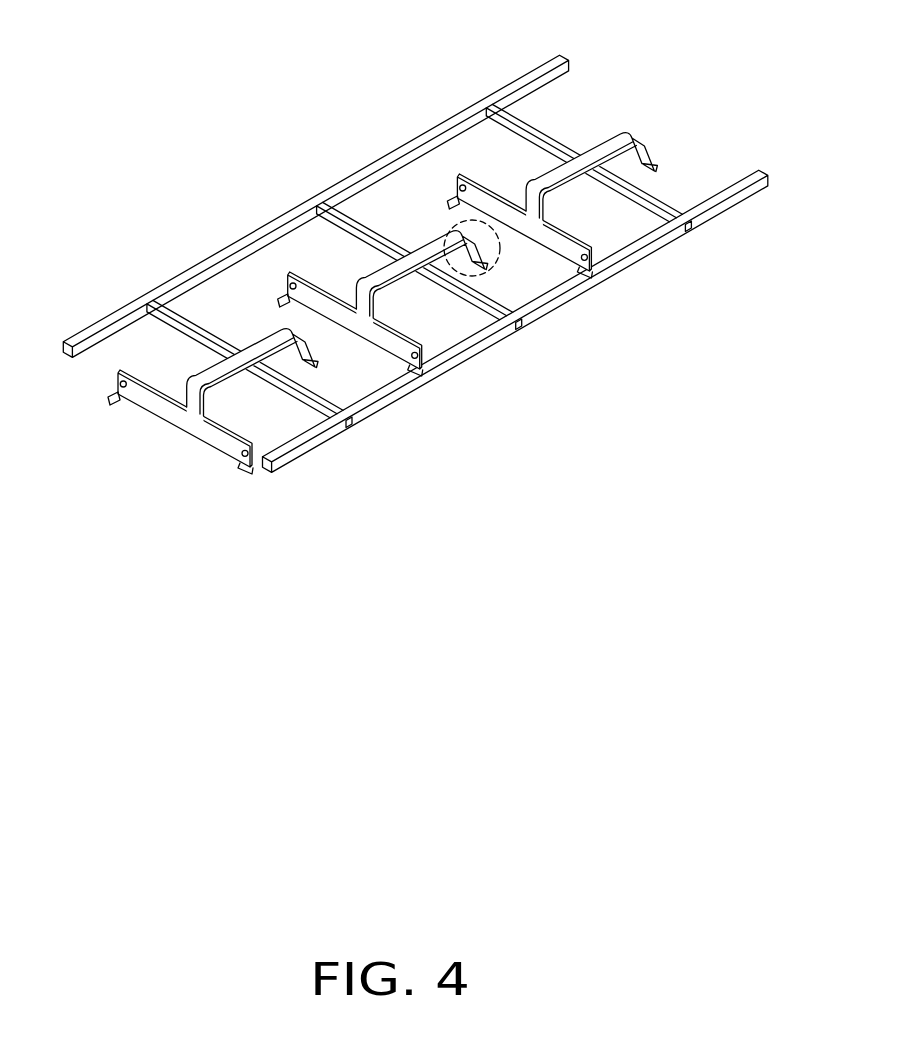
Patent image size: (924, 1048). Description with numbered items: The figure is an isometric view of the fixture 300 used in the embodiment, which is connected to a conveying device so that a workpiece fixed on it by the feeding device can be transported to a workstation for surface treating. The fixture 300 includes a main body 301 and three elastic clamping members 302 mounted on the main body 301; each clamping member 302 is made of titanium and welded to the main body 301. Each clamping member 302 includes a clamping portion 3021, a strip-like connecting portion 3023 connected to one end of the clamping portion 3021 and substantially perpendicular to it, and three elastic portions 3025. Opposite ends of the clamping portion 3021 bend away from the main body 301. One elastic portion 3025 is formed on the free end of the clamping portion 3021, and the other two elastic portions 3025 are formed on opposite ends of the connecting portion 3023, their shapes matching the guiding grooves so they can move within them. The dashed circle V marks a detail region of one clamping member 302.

The fixture 300 is at (212, 58).
The main body 301 is at (124, 312).
The elastic clamping member 302 is at (333, 555).
The clamping portion 3021 is at (190, 397).
The connecting portion 3023 is at (200, 430).
The elastic portion 3025 is at (237, 473).
The detail region V is at (505, 262).